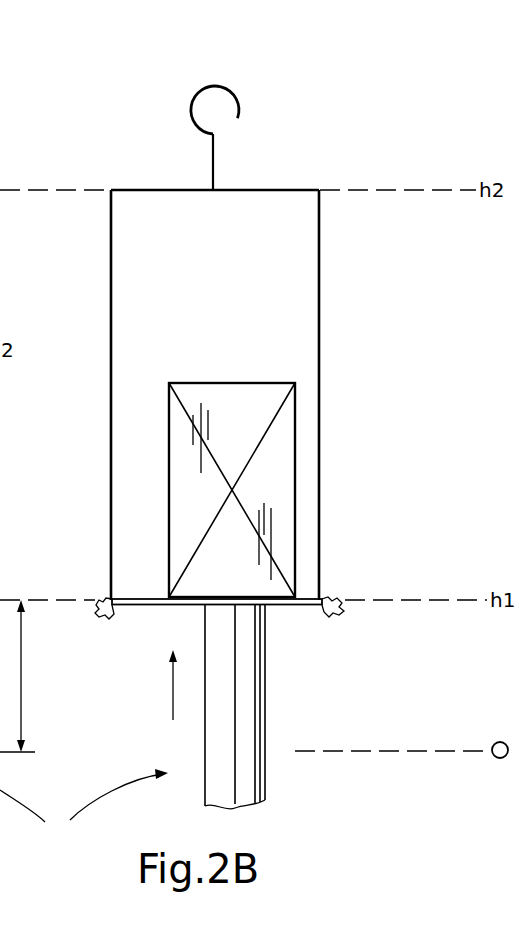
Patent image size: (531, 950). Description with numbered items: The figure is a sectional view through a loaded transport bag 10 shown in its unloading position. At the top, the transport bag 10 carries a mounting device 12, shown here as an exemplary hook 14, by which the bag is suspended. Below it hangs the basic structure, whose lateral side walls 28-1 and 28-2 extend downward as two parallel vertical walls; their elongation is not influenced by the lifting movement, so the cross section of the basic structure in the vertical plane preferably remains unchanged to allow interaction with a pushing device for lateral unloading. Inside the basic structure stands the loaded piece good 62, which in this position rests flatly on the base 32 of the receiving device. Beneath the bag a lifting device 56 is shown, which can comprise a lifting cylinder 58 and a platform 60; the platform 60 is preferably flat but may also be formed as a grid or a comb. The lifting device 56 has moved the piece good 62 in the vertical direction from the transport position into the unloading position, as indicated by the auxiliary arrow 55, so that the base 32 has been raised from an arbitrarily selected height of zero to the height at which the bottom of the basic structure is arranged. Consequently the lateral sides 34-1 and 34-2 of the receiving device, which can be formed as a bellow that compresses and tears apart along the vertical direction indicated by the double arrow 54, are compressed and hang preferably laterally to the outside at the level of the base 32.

The transport bag 10 is at (133, 128).
The mounting device 12 is at (244, 127).
The hook 14 is at (213, 157).
The lateral side wall of the basic structure 28-1 is at (111, 305).
The lateral side wall of the basic structure 28-2 is at (319, 290).
The piece good 62 is at (220, 383).
The base 32 is at (162, 588).
The lateral side of the receiving device 34-1 is at (103, 597).
The lateral side of the receiving device 34-2 is at (340, 597).
The platform 60 is at (285, 606).
The double arrow 54 is at (21, 668).
The auxiliary arrow 55 is at (173, 683).
The lifting device 56 is at (84, 808).
The lifting cylinder 58 is at (268, 757).